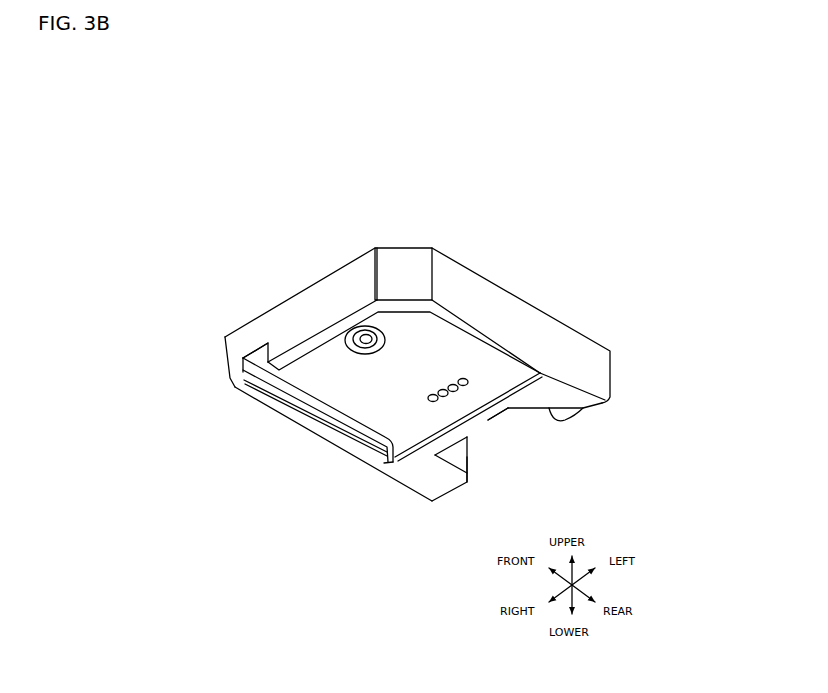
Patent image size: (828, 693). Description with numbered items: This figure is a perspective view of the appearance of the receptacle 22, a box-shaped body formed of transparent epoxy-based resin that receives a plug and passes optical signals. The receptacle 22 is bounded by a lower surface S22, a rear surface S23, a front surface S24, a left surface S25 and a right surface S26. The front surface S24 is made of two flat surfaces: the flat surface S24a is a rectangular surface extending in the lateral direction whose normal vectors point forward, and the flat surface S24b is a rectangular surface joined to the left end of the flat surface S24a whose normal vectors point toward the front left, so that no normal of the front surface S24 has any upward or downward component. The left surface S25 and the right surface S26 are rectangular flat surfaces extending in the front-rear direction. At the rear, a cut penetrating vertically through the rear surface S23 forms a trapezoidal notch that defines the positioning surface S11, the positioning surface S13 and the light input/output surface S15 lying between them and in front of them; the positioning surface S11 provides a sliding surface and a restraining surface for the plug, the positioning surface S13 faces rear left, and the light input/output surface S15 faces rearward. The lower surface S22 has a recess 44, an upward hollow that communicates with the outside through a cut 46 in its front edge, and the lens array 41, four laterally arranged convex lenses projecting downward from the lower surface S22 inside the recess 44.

The receptacle 22 is at (206, 159).
The front surface S24 is at (454, 197).
The flat surface S24a is at (335, 287).
The flat surface S24b is at (398, 262).
The left surface S25 is at (517, 320).
The right surface S26 is at (310, 432).
The cut 46 is at (255, 352).
The recess 44 is at (358, 393).
The lens array 41 is at (458, 400).
The positioning surface S13 is at (583, 410).
The light input/output surface S15 is at (492, 421).
The positioning surface S11 is at (467, 484).
The lower surface S22 is at (414, 463).
The rear surface S23 is at (524, 461).